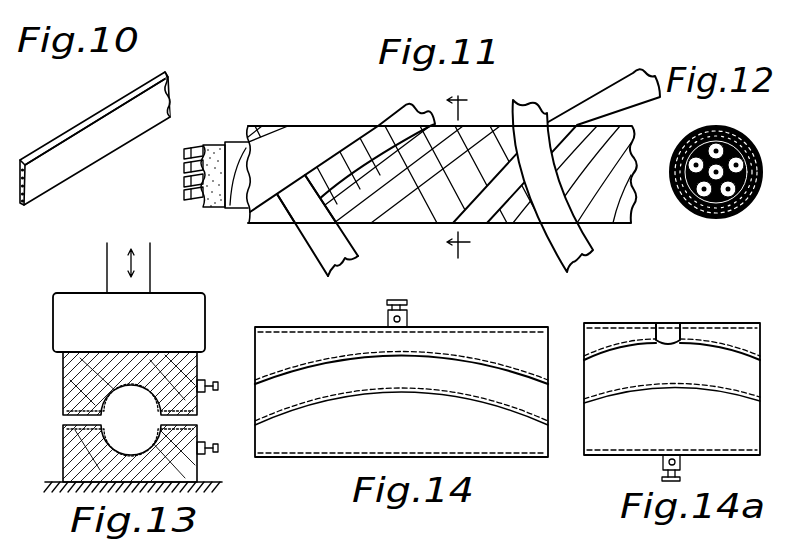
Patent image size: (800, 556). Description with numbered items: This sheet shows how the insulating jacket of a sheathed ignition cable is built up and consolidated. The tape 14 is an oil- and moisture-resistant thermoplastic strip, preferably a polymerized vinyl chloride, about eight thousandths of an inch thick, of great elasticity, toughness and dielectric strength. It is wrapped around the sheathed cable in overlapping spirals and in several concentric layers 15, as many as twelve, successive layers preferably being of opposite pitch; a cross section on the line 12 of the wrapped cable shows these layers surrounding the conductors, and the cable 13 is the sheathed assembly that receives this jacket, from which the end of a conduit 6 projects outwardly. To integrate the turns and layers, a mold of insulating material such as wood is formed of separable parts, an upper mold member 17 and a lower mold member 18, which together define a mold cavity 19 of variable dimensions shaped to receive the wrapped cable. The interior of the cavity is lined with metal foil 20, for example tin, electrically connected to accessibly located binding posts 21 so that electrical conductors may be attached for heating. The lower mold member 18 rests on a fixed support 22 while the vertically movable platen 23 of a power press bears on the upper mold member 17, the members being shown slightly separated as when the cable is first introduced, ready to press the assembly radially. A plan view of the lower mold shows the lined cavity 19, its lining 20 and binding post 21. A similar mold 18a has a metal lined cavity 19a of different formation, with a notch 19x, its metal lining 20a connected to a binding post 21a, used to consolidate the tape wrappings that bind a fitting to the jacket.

In FIG. 10, the tape 14 is at (53, 144).
In FIG. 11, the tape 14 is at (410, 108).
In FIG. 11, the section line 12— 12 is at (461, 175).
In FIG. 12, the cable 13 is at (683, 147).
In FIG. 12, the layers 15 is at (717, 125).
In FIG. 12, the conduit 6 is at (740, 138).
In FIG. 13, the platen 23 is at (174, 300).
In FIG. 13, the upper mold member 17 is at (72, 395).
In FIG. 13, the lower mold member 18 is at (70, 450).
In FIG. 14, the lower mold member 18 is at (500, 448).
In FIG. 13, the mold cavity 19 is at (131, 392).
In FIG. 14, the mold cavity 19 is at (437, 360).
In FIG. 13, the metal foil lining 20 is at (110, 383).
In FIG. 13, the binding posts 21 is at (206, 382).
In FIG. 14, the binding posts 21 is at (407, 320).
In FIG. 13, the fixed support 22 is at (205, 482).
In FIG. 14A, the mold 18a is at (730, 440).
In FIG. 14A, the metal lined cavity 19a is at (695, 355).
In FIG. 14A, the cavity notch 19x is at (665, 330).
In FIG. 14A, the metal lining 20a is at (590, 360).
In FIG. 14A, the binding post 21a is at (663, 465).